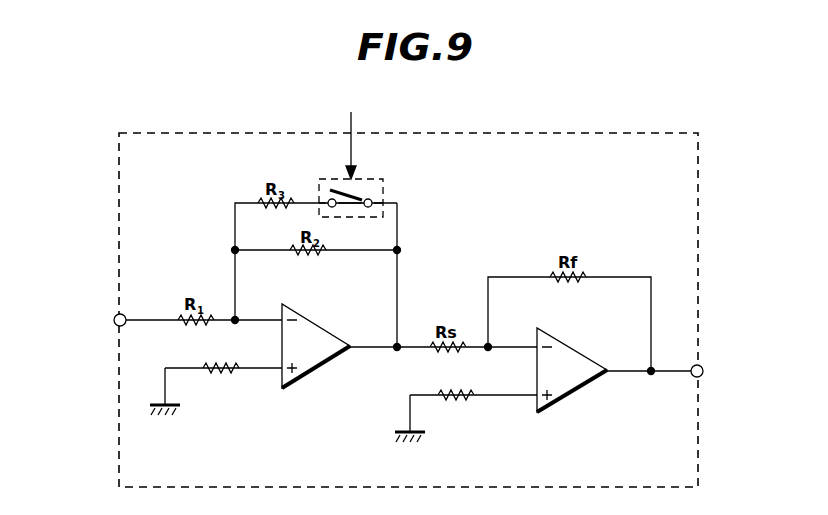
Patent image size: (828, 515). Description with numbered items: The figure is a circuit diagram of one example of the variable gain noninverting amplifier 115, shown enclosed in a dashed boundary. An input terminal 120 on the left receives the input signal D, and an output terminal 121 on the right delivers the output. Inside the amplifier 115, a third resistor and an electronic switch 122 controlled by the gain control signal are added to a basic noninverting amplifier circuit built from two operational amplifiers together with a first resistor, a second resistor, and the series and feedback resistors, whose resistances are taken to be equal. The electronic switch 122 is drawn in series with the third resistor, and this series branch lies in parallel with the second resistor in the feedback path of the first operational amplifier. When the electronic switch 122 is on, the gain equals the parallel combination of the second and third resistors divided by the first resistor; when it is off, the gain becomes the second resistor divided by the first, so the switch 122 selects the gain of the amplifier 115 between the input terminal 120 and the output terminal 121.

The variable gain noninverting amplifier 115 is at (624, 133).
The input terminal 120 is at (117, 327).
The output terminal 121 is at (700, 377).
The electronic switch 122 is at (385, 195).